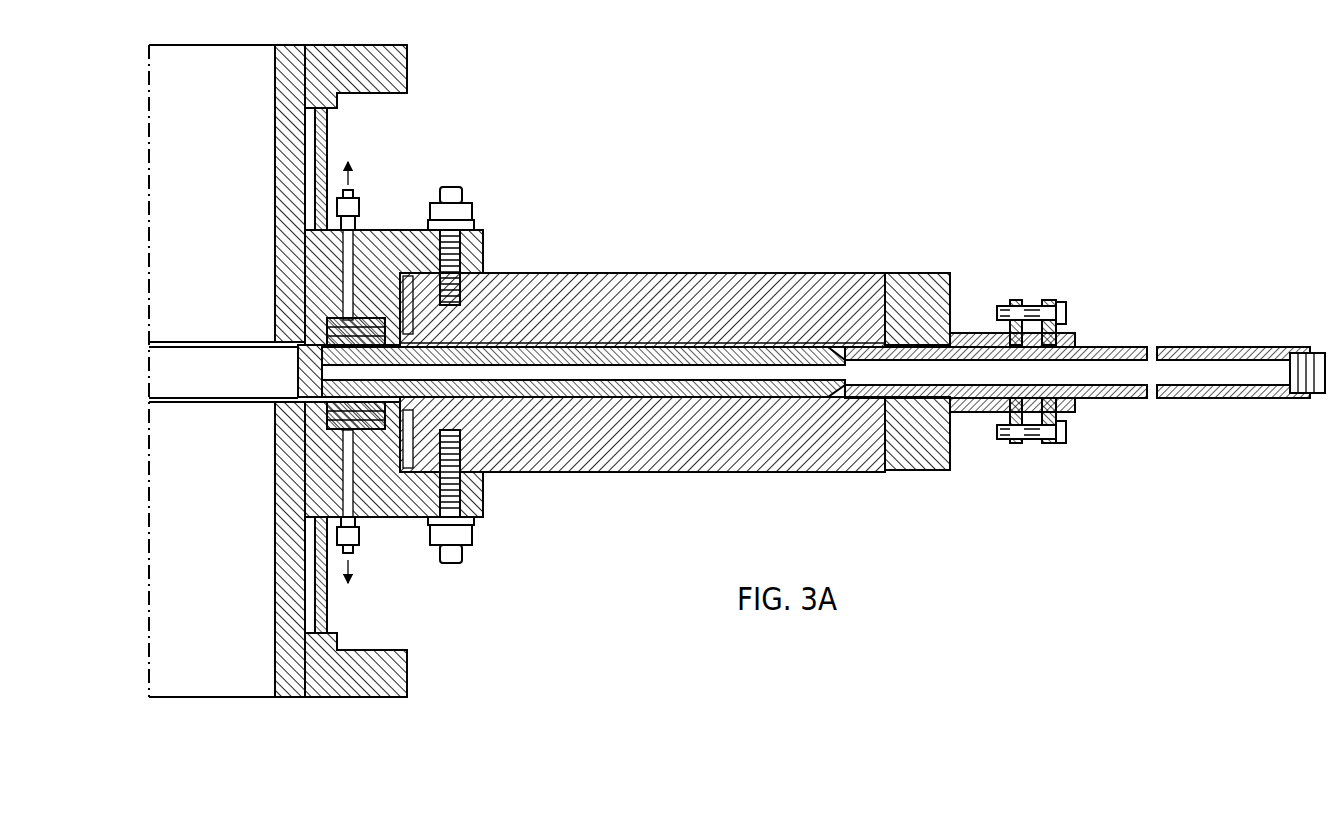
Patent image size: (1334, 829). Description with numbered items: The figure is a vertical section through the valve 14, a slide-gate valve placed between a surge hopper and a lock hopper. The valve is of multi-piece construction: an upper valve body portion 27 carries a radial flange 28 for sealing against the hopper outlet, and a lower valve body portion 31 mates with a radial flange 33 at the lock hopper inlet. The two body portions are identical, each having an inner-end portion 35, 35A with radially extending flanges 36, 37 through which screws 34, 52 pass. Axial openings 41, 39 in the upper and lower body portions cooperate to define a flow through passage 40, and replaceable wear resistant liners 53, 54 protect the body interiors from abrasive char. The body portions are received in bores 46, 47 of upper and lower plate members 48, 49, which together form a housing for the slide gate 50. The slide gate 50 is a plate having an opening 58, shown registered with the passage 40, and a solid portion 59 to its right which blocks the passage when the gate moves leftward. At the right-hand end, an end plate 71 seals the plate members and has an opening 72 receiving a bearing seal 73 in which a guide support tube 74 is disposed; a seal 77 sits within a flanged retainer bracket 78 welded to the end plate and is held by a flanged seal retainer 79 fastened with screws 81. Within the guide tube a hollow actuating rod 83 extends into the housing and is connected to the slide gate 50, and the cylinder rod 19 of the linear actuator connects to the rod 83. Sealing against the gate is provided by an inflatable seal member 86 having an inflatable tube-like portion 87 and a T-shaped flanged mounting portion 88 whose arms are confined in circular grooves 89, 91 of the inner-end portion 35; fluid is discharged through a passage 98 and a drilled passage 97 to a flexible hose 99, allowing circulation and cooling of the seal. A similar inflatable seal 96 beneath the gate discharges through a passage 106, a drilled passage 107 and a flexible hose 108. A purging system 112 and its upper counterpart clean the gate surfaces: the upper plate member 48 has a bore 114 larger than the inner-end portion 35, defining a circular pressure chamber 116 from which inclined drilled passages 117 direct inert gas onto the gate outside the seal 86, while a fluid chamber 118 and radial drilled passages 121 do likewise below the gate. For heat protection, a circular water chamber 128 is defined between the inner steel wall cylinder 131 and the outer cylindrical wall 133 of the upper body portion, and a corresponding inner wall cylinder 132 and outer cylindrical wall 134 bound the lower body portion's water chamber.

The valve 14 is at (579, 173).
The cylinder rod 19 is at (1300, 355).
The upper valve body portion 27 is at (338, 128).
The radial flange 28 is at (408, 60).
The lower valve body portion 31 is at (345, 598).
The radial flange 33 is at (409, 668).
The screws 34 is at (462, 197).
The inner-end portion 35 is at (372, 258).
The inner-end portion 35A is at (362, 530).
The radially extending flange 36 is at (486, 240).
The radially extending flange 37 is at (485, 490).
The axial opening 39 is at (285, 697).
The flow through passage 40 is at (190, 62).
The axial opening 41 is at (284, 46).
The bore 46 is at (406, 253).
The bore 47 is at (394, 459).
The upper plate member 48 is at (712, 273).
The lower plate member 49 is at (808, 473).
The slide gate 50 is at (298, 380).
The screws 52 is at (470, 556).
The wear resistant liner 53 is at (276, 122).
The wear resistant liner 54 is at (276, 530).
The opening 58 is at (298, 361).
The solid portion 59 is at (648, 342).
The end plate 71 is at (922, 273).
The opening 72 is at (917, 371).
The bearing seal 73 is at (880, 328).
The guide support tube 74 is at (1162, 347).
The seal 77 is at (962, 333).
The flanged retainer bracket 78 is at (1015, 300).
The flanged seal retainer 79 is at (1046, 331).
The screws 81 is at (1062, 308).
The slide gate actuating rod 83 is at (1200, 398).
The inflatable seal member 86 is at (330, 332).
The inflatable tube-like portion 87 is at (583, 358).
The flanged mounting portion 88 is at (300, 292).
The circular groove 89 is at (382, 299).
The circular groove 91 is at (318, 324).
The inflatable seal 96 is at (300, 437).
The drilled passage 97 is at (318, 264).
The passage 98 is at (340, 403).
The flexible hose 99 is at (354, 200).
The passage 106 is at (332, 452).
The drilled passage 107 is at (330, 490).
The flexible hose 108 is at (357, 550).
The purging system 112 is at (418, 394).
The bore 114 is at (470, 268).
The circular pressure chamber 116 is at (460, 312).
The drilled passages 117 is at (480, 318).
The fluid chamber 118 is at (462, 455).
The radial-drilled passages 121 is at (430, 436).
The circular water chamber 128 is at (310, 158).
The inner steel wall cylinder 131 is at (292, 196).
The inner steel wall cylinder 132 is at (282, 571).
The outer cylindrical wall 133 is at (327, 160).
The outer cylindrical wall 134 is at (327, 620).